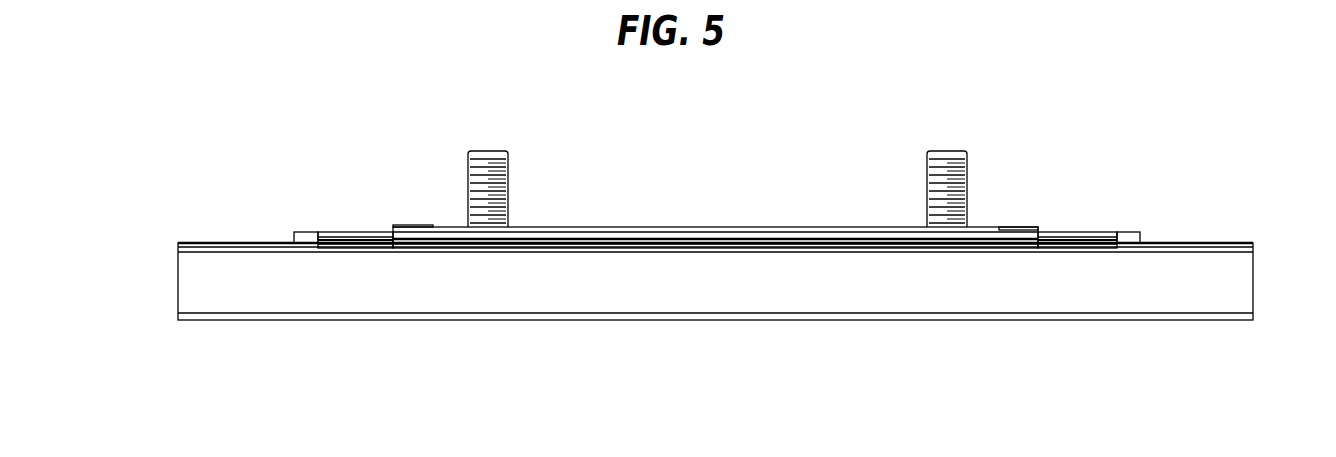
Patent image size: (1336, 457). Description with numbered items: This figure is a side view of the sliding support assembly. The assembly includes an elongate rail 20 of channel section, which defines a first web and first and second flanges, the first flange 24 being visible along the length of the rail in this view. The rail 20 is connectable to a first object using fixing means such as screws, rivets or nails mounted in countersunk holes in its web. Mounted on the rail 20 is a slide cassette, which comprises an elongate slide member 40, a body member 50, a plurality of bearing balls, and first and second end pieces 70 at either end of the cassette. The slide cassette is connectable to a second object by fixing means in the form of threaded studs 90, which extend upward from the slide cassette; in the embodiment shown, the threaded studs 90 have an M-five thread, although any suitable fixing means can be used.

The elongate rail 20 is at (203, 228).
The first flange 24 is at (1226, 283).
The elongate slide member 40 is at (666, 227).
The body member 50 is at (362, 238).
The end pieces 70 is at (305, 232).
The threaded studs 90 is at (488, 150).